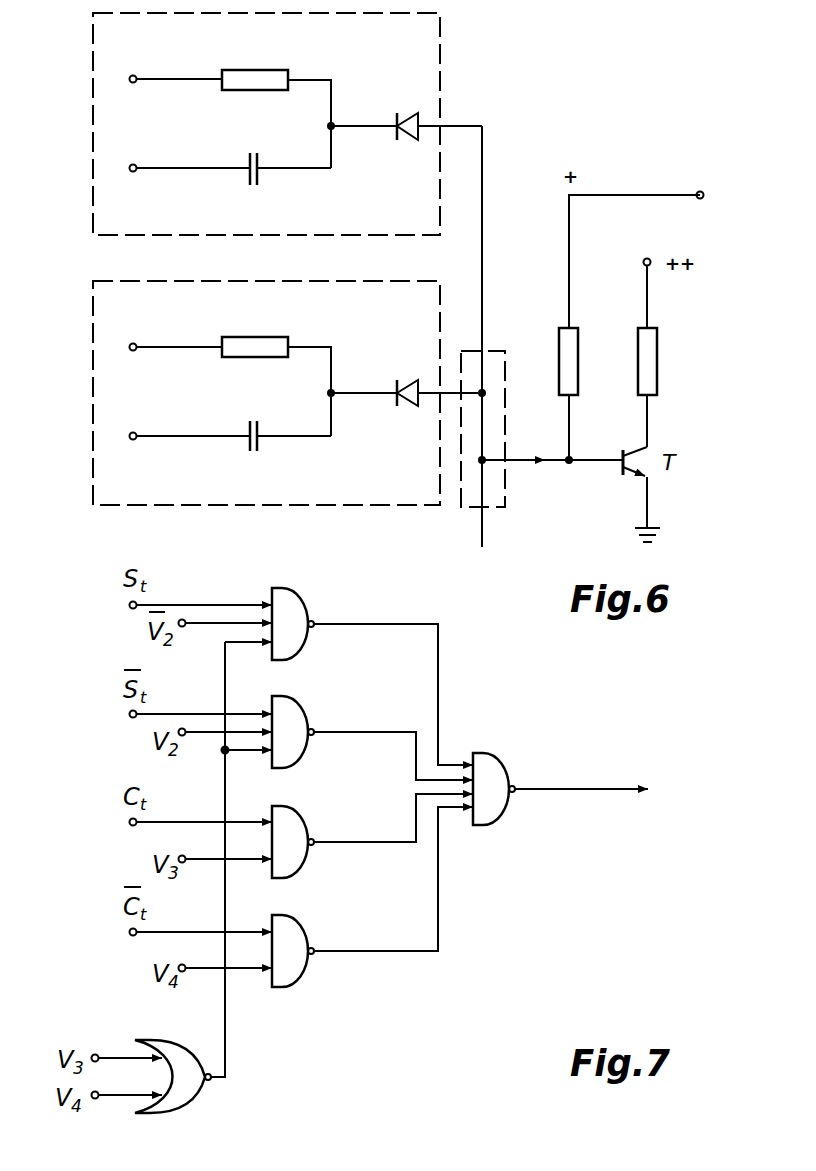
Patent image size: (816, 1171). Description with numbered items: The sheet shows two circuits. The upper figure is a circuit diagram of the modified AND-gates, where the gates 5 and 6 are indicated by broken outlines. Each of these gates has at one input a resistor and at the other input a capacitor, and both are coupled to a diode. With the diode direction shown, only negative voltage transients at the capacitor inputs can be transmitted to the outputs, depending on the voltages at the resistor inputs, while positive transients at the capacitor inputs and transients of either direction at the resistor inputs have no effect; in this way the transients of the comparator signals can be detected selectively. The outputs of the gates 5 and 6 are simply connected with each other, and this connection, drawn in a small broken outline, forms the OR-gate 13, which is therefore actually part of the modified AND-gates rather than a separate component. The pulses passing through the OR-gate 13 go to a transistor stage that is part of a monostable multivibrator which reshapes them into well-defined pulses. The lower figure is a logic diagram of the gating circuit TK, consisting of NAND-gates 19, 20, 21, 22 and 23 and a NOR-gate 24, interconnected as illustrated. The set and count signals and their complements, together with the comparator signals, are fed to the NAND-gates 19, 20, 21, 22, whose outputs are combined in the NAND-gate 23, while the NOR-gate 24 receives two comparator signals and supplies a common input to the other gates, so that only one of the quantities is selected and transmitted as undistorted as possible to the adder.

In FIG. 6, the modified AND-gate 5 is at (106, 73).
In FIG. 6, the modified AND-gate 6 is at (106, 339).
In FIG. 6, the OR-gate 13 is at (492, 495).
In FIG. 7, the NAND-gate 19 is at (301, 620).
In FIG. 7, the NAND-gate 20 is at (301, 728).
In FIG. 7, the NAND-gate 21 is at (301, 840).
In FIG. 7, the NAND-gate 22 is at (301, 947).
In FIG. 7, the NAND-gate 23 is at (492, 779).
In FIG. 7, the NOR-gate 24 is at (181, 1095).